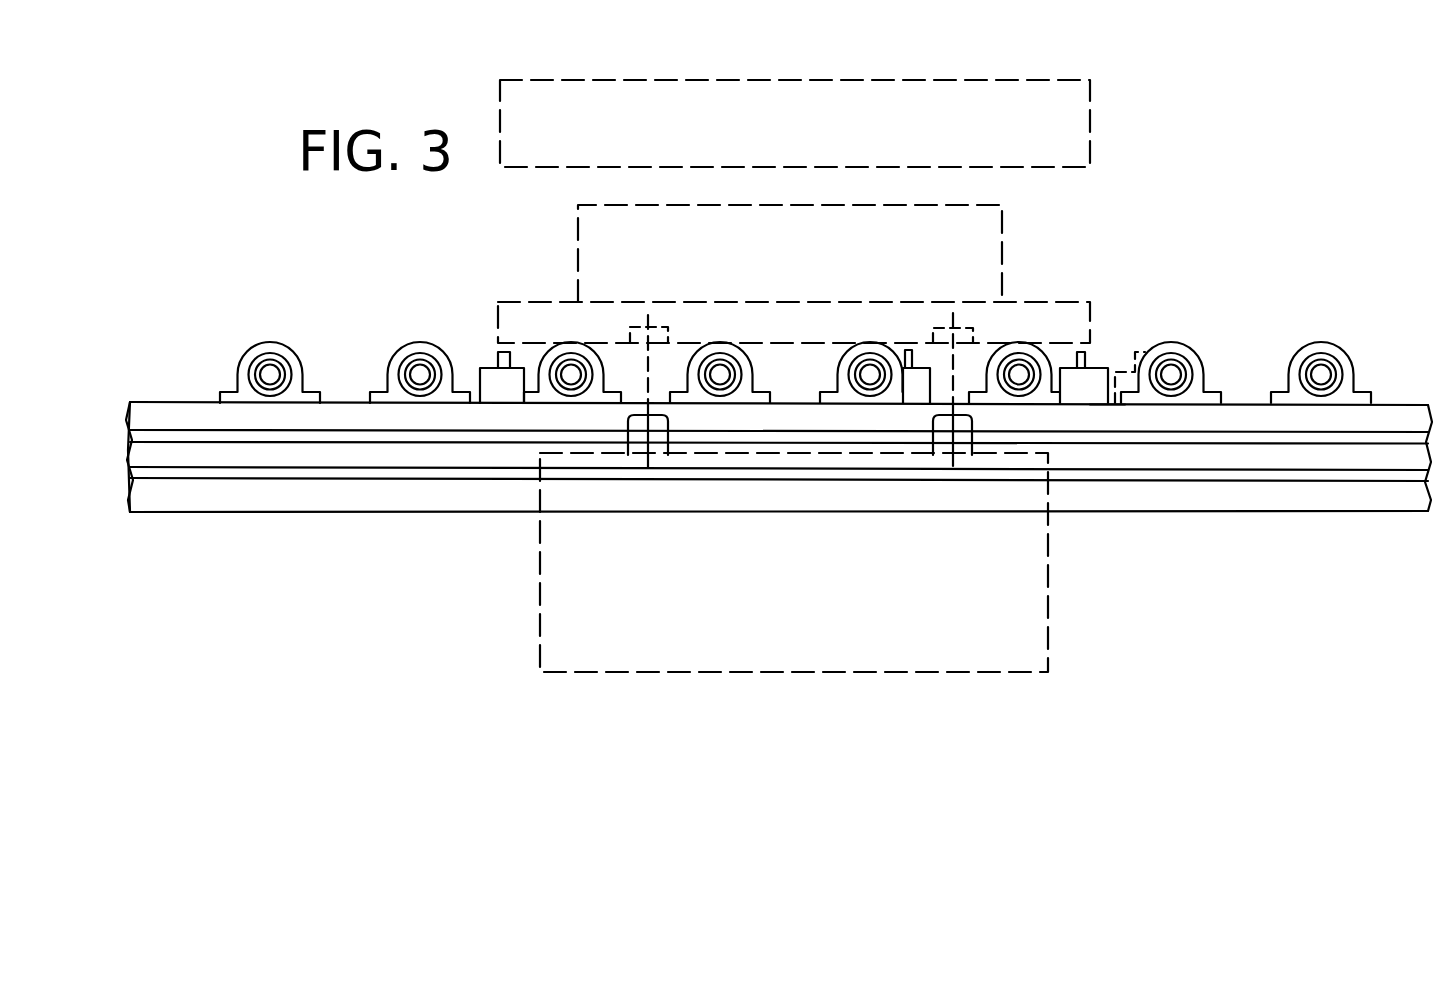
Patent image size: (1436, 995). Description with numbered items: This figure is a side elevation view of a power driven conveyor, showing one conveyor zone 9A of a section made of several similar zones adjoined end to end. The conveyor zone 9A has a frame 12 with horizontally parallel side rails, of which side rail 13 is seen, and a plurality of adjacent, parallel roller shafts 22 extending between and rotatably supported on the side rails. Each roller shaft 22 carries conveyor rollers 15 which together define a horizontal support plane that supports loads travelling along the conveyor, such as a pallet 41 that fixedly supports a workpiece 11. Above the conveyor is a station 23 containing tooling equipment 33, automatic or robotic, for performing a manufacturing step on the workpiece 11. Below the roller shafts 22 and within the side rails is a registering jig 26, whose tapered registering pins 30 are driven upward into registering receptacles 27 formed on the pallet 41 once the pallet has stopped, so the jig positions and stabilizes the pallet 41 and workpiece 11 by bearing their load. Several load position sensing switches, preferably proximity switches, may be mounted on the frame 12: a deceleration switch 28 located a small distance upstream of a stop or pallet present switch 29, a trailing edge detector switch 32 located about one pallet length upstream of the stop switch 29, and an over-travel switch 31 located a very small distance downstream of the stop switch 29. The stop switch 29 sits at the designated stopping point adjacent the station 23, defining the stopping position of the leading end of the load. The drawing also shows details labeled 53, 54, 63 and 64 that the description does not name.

The conveyor zone 9A is at (180, 136).
The workpiece 11 is at (1002, 207).
The frame 12 is at (255, 513).
The side rail 13 is at (397, 467).
The conveyor roller 15 is at (258, 345).
The roller shaft 22 is at (271, 376).
The station 23 is at (712, 75).
The registering jig 26 is at (537, 618).
The registering receptacle 27 is at (633, 327).
The deceleration switch 28 is at (935, 373).
The stop switch 29 is at (1143, 345).
The registering pin 30 is at (628, 428).
The over-travel switch 31 is at (1105, 405).
The trailing edge detector switch 32 is at (472, 368).
The tooling equipment 33 is at (856, 80).
The pallet 41 is at (530, 300).
The block 53 is at (903, 352).
The block 54 is at (1093, 372).
The bearing 63 is at (1220, 347).
The pin 64 is at (497, 365).